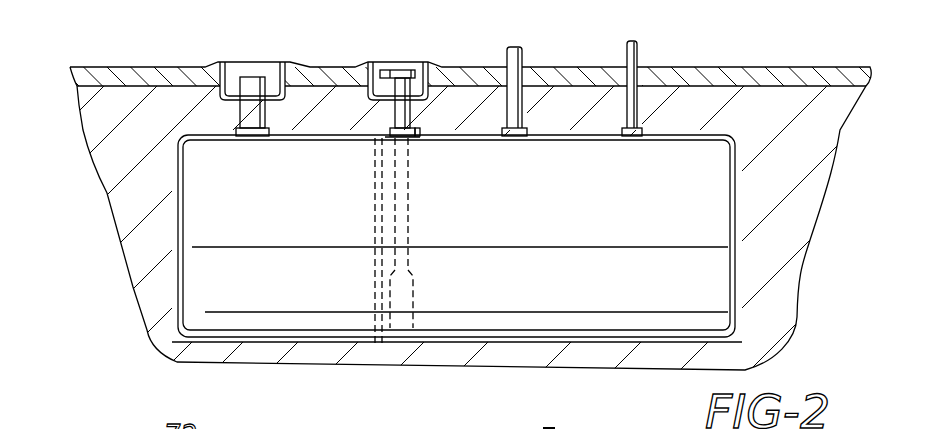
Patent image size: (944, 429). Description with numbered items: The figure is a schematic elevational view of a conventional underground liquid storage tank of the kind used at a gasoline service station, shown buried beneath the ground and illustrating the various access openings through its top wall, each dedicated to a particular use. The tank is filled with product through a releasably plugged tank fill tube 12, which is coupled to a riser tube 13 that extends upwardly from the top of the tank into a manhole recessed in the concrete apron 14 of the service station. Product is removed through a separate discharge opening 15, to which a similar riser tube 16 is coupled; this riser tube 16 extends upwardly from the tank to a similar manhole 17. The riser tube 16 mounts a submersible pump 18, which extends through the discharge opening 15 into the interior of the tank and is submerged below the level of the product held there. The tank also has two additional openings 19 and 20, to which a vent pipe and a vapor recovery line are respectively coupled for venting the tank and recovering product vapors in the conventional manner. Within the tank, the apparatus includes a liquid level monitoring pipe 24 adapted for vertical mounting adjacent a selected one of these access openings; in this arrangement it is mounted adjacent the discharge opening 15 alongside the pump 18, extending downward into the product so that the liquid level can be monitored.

The tank fill tube 12 is at (286, 126).
The riser tube 13 is at (245, 87).
The concrete apron 14 is at (343, 77).
The discharge opening 15 is at (412, 132).
The riser tube 16 is at (400, 115).
The manhole 17 is at (433, 78).
The submersible pump 18 is at (405, 300).
The opening 19 is at (640, 55).
The opening 20 is at (522, 58).
The liquid level monitoring pipe 24 is at (362, 185).